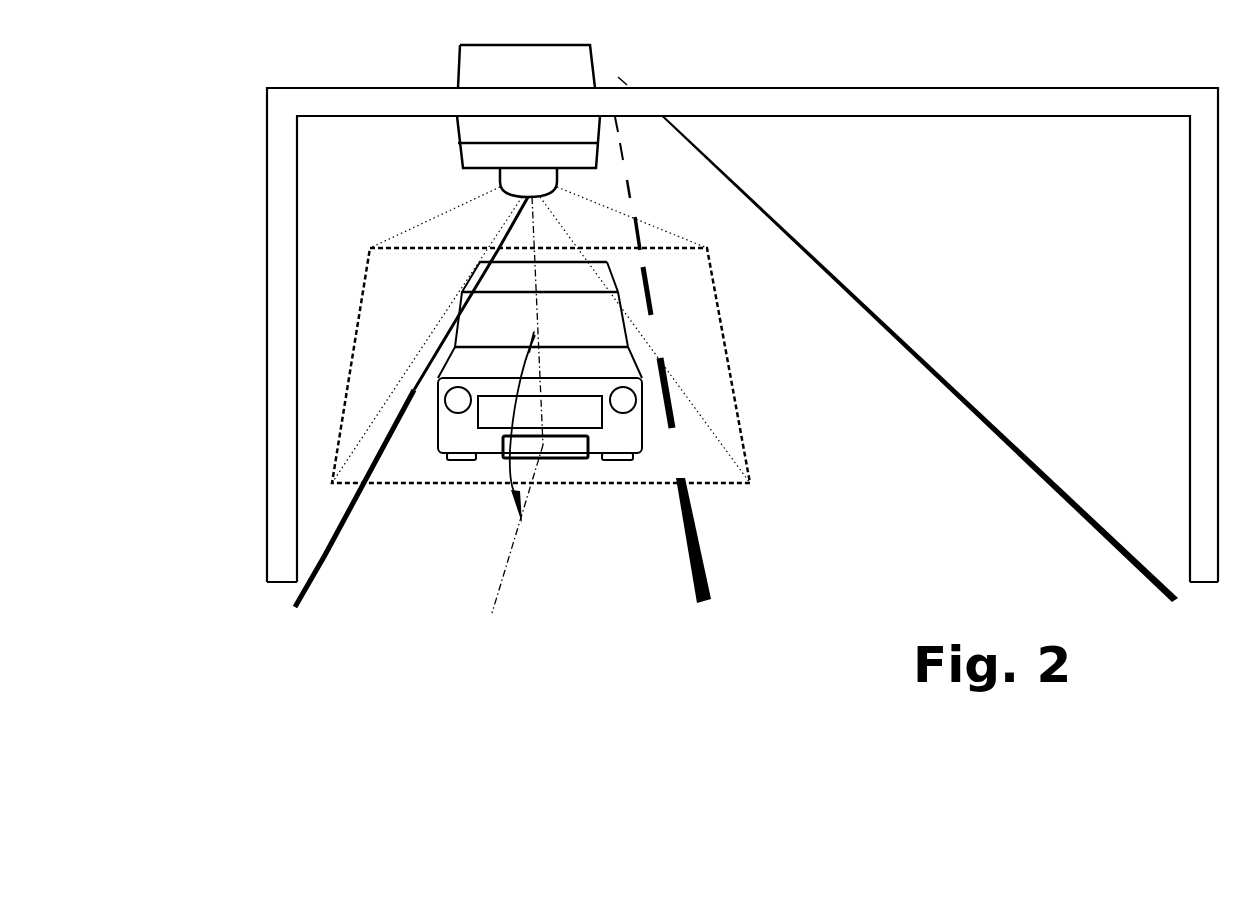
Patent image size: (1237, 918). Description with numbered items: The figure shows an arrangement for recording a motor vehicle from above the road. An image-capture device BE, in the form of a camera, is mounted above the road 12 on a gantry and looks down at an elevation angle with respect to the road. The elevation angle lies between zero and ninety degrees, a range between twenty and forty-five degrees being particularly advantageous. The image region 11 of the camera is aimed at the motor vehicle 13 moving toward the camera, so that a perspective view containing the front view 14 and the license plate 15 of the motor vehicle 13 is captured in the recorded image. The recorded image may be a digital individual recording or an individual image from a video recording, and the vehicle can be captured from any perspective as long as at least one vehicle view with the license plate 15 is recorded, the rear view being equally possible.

The image-capture device BE is at (470, 72).
The image region 11 is at (737, 487).
The road 12 is at (338, 568).
The motor vehicle 13 is at (634, 379).
The front view 14 is at (453, 433).
The license plate 15 is at (565, 447).